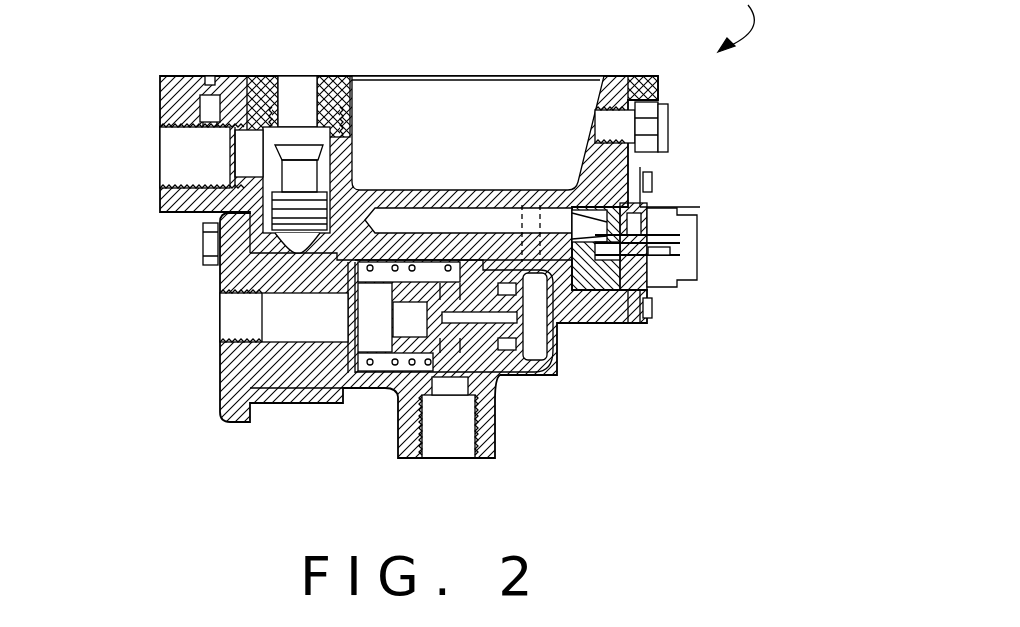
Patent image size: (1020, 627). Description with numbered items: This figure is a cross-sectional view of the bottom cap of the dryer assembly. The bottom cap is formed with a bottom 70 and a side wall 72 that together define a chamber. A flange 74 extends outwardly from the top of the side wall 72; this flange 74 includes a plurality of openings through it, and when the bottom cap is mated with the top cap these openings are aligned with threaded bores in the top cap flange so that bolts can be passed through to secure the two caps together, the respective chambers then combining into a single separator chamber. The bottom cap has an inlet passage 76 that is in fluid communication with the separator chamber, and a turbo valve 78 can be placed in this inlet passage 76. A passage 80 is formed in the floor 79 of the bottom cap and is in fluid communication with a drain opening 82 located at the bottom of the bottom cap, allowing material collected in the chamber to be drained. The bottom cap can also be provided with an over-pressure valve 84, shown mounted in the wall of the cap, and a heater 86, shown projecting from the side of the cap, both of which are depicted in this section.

The bottom 70 is at (325, 76).
The side wall 72 is at (597, 93).
The flange 74 is at (628, 77).
The inlet passage 76 is at (156, 164).
The turbo valve 78 is at (290, 176).
The floor 79 is at (447, 192).
The passage 80 is at (531, 217).
The drain opening 82 is at (447, 437).
The over-pressure valve 84 is at (670, 113).
The heater 86 is at (698, 250).